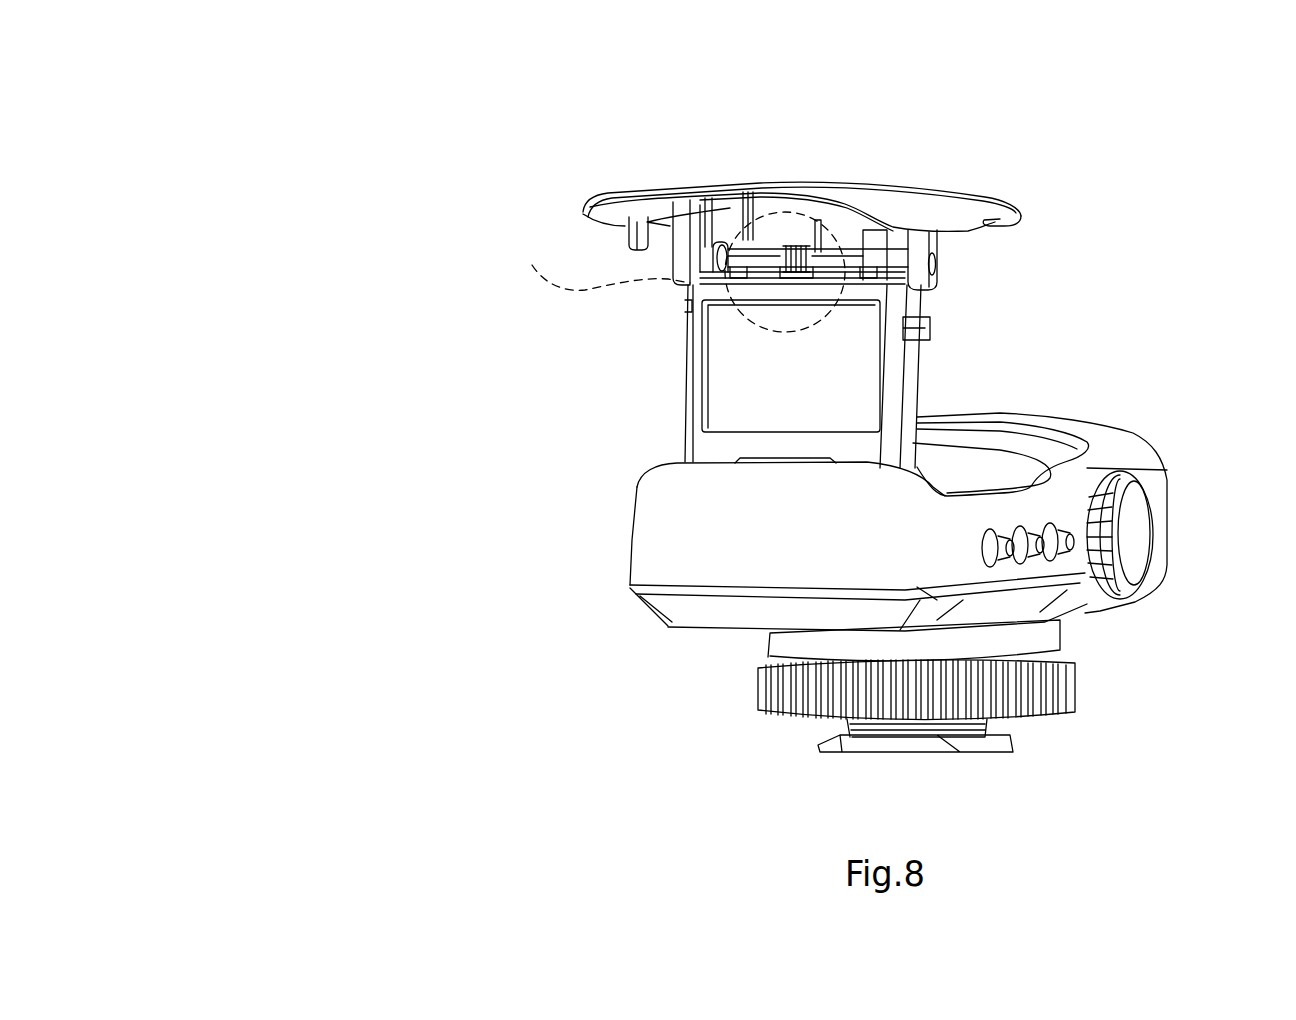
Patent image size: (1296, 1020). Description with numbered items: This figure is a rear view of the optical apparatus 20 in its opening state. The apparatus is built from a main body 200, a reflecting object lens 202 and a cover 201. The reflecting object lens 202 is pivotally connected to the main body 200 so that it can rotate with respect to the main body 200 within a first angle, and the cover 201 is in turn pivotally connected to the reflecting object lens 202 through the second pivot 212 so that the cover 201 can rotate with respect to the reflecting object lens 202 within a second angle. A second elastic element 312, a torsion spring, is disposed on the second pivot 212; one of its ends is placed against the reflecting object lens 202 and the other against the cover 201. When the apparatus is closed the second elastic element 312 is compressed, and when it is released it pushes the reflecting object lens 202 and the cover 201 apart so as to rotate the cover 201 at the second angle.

The optical apparatus 20 is at (270, 63).
The main body 200 is at (1085, 598).
The cover 201 is at (957, 208).
The reflecting object lens 202 is at (698, 384).
The second pivot 212 is at (882, 254).
The second elastic element 312 is at (833, 280).